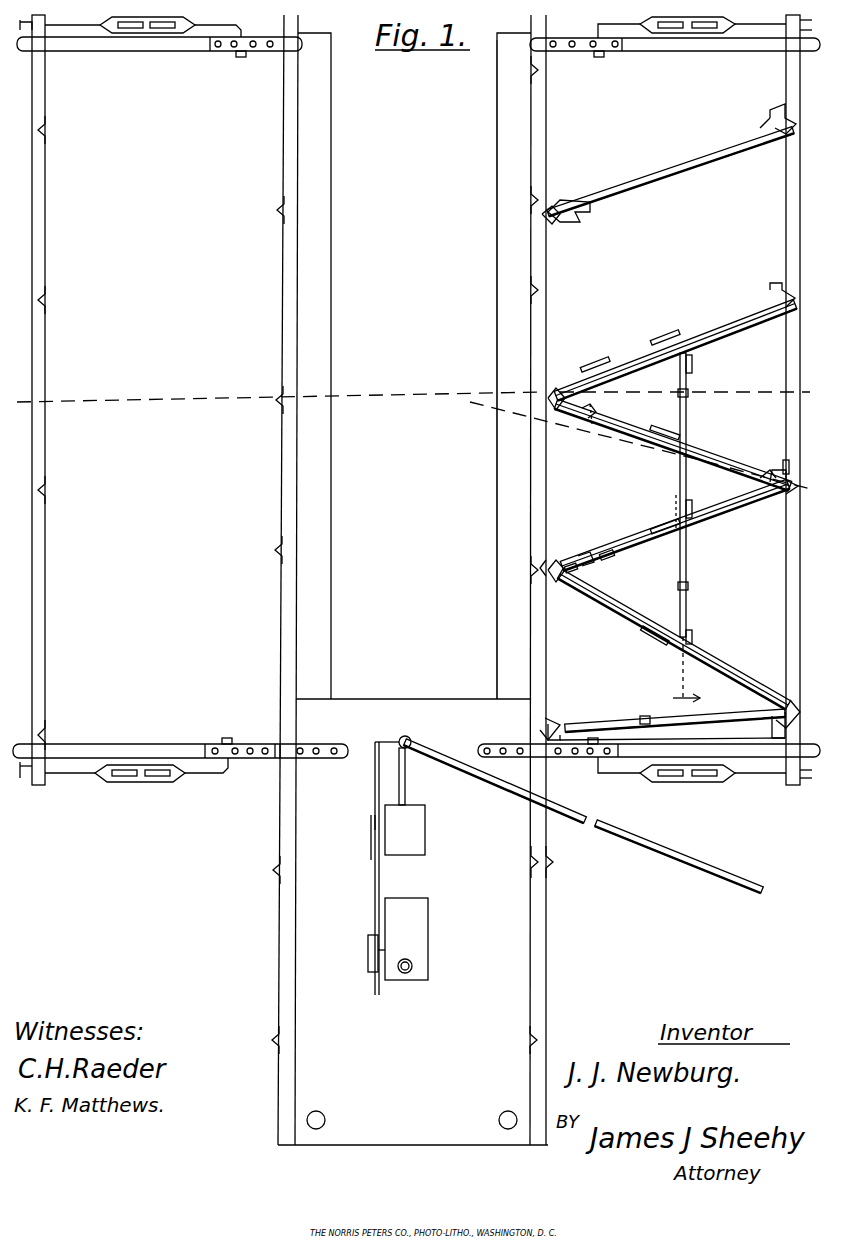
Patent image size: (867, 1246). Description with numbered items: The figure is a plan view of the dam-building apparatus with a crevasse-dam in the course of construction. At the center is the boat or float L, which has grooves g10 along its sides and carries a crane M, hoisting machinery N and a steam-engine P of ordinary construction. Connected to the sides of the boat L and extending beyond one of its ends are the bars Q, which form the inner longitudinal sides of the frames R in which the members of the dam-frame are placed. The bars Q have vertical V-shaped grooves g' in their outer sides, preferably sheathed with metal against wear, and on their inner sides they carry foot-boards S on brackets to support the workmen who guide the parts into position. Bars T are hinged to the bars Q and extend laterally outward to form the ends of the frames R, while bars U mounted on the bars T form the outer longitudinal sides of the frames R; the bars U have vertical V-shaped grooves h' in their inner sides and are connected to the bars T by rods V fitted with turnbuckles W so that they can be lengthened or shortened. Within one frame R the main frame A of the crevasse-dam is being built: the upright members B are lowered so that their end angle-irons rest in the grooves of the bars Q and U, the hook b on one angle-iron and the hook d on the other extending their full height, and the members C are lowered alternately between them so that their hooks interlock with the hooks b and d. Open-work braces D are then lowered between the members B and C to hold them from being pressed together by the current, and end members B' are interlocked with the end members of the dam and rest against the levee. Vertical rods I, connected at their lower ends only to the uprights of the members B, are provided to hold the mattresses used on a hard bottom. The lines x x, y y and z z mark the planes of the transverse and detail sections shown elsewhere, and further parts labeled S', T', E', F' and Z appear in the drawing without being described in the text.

The frames R is at (398, 366).
The bars U is at (45, 432).
The foot-boards S is at (313, 580).
The frame side bar S' is at (481, 369).
The bars Q is at (546, 455).
The grooves g10 is at (560, 856).
The boat or float L is at (413, 1068).
The upper cross bar T' is at (675, 50).
The bars T is at (649, 763).
The turnbuckles W is at (676, 784).
The rods V is at (742, 777).
The section line x x is at (628, 683).
The section line y y is at (636, 452).
The section line z z is at (683, 589).
The open-work braces D is at (691, 526).
The hook d is at (768, 294).
The main frame A is at (672, 479).
The frame members B is at (674, 531).
The frame members C is at (714, 656).
The end members B' is at (669, 765).
The vertical rods I is at (760, 128).
The hook b is at (592, 428).
The V-shaped grooves h' is at (802, 465).
The clip E' is at (576, 543).
The clip F' is at (610, 535).
The V-shaped grooves g' is at (508, 556).
The crane M is at (405, 736).
The hoisting machinery N is at (412, 843).
The steam-engine P is at (428, 948).
The mounting hole Z is at (324, 1112).